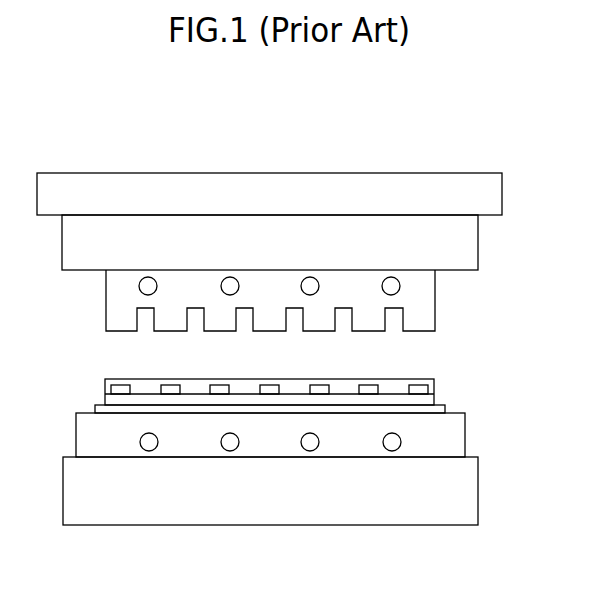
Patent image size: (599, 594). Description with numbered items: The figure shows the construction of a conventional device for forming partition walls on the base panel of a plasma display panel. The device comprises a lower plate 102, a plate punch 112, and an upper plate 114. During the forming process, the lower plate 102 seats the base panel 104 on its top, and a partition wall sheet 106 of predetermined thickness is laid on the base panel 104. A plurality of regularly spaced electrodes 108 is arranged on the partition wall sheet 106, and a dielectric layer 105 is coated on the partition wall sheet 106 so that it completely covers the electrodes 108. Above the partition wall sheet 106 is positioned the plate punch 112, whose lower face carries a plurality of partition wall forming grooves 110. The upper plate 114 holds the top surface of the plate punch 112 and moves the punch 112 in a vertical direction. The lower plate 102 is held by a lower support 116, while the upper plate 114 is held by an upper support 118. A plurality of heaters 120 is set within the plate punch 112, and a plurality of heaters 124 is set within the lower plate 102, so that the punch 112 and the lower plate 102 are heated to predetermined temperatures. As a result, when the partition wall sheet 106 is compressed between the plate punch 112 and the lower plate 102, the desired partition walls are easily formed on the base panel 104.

The upper support 118 is at (448, 190).
The upper plate 114 is at (468, 245).
The plate punch 112 is at (113, 293).
The heaters 120 is at (310, 280).
The partition wall forming grooves 110 is at (148, 322).
The partition wall sheet 106 is at (432, 400).
The dielectric layer 105 is at (389, 387).
The electrodes 108 is at (415, 387).
The base panel 104 is at (443, 410).
The lower plate 102 is at (452, 438).
The heaters 124 is at (232, 446).
The lower support 116 is at (470, 498).